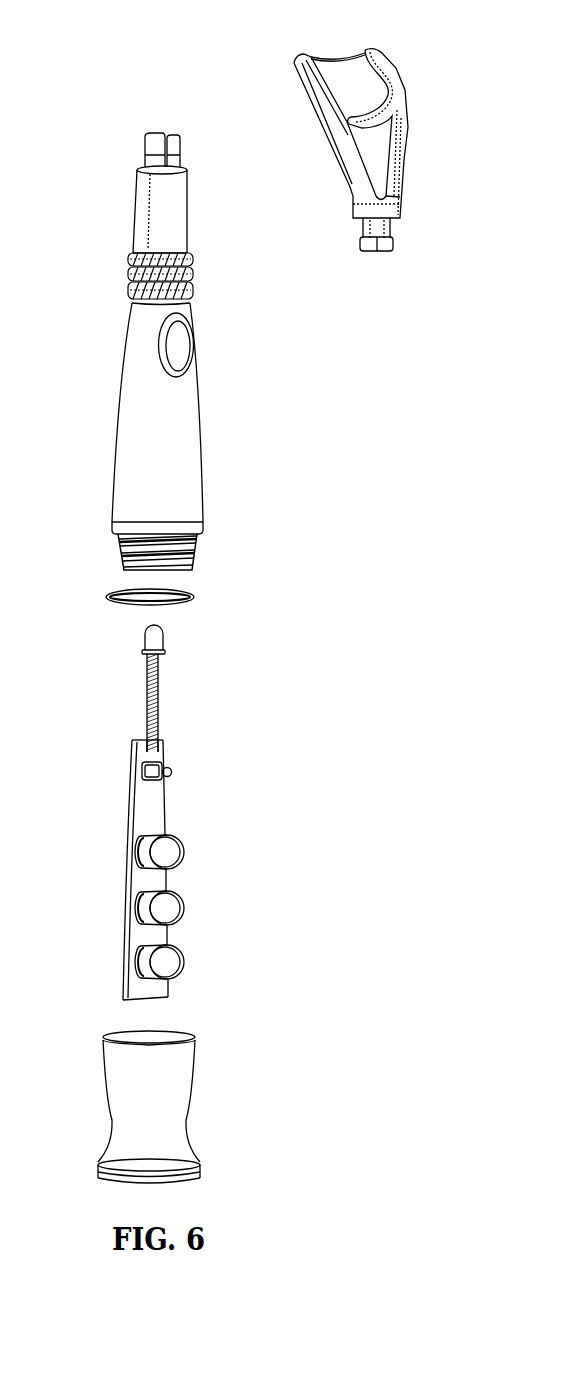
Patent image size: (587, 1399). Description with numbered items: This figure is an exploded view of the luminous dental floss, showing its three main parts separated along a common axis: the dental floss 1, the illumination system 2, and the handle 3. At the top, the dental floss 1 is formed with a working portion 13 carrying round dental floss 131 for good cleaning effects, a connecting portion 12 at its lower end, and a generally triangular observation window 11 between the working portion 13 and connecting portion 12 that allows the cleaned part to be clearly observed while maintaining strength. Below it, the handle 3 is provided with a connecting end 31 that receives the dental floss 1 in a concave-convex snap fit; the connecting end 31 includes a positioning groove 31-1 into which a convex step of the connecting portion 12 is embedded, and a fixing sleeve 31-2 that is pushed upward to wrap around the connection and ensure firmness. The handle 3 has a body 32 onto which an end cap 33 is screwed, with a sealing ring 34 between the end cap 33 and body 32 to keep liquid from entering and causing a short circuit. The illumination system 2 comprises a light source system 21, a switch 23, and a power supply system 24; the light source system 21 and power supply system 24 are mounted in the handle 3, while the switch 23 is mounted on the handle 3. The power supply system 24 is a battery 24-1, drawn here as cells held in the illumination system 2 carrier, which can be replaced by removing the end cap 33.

The dental floss 1 is at (352, 149).
The observation window 11 is at (383, 153).
The connecting portion 12 is at (380, 251).
The working portion 13 is at (327, 55).
The round dental floss 131 is at (337, 58).
The illumination system 2 is at (189, 802).
The light source system 21 is at (145, 637).
The switch 23 is at (175, 773).
The power supply system 24 is at (167, 857).
The battery 24-1 is at (163, 918).
The handle 3 is at (173, 658).
The connecting end 31 is at (153, 196).
The positioning groove 31-1 is at (187, 173).
The fixing sleeve 31-2 is at (153, 235).
The body 32 is at (180, 403).
The end cap 33 is at (177, 1070).
The sealing ring 34 is at (197, 597).